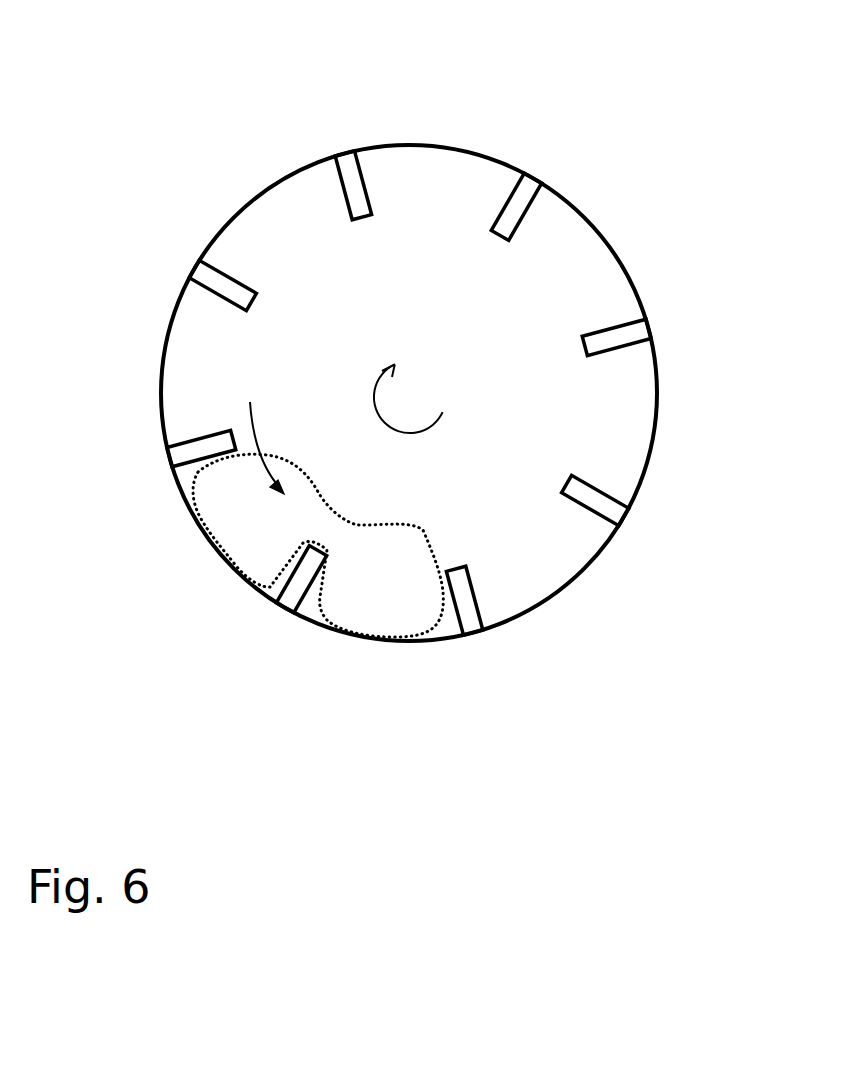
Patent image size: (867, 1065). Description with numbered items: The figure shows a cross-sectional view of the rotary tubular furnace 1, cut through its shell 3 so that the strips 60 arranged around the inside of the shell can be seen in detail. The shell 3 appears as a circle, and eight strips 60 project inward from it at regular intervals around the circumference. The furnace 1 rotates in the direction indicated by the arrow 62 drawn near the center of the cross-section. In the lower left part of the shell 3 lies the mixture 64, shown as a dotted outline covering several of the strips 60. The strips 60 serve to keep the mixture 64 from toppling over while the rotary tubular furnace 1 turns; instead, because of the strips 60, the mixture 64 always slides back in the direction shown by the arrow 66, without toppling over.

The rotary tubular furnace 1 is at (194, 122).
The shell 3 is at (431, 142).
The strips 60 is at (630, 333).
The arrow 62 is at (433, 425).
The mixture 64 is at (395, 597).
The arrow 66 is at (250, 413).